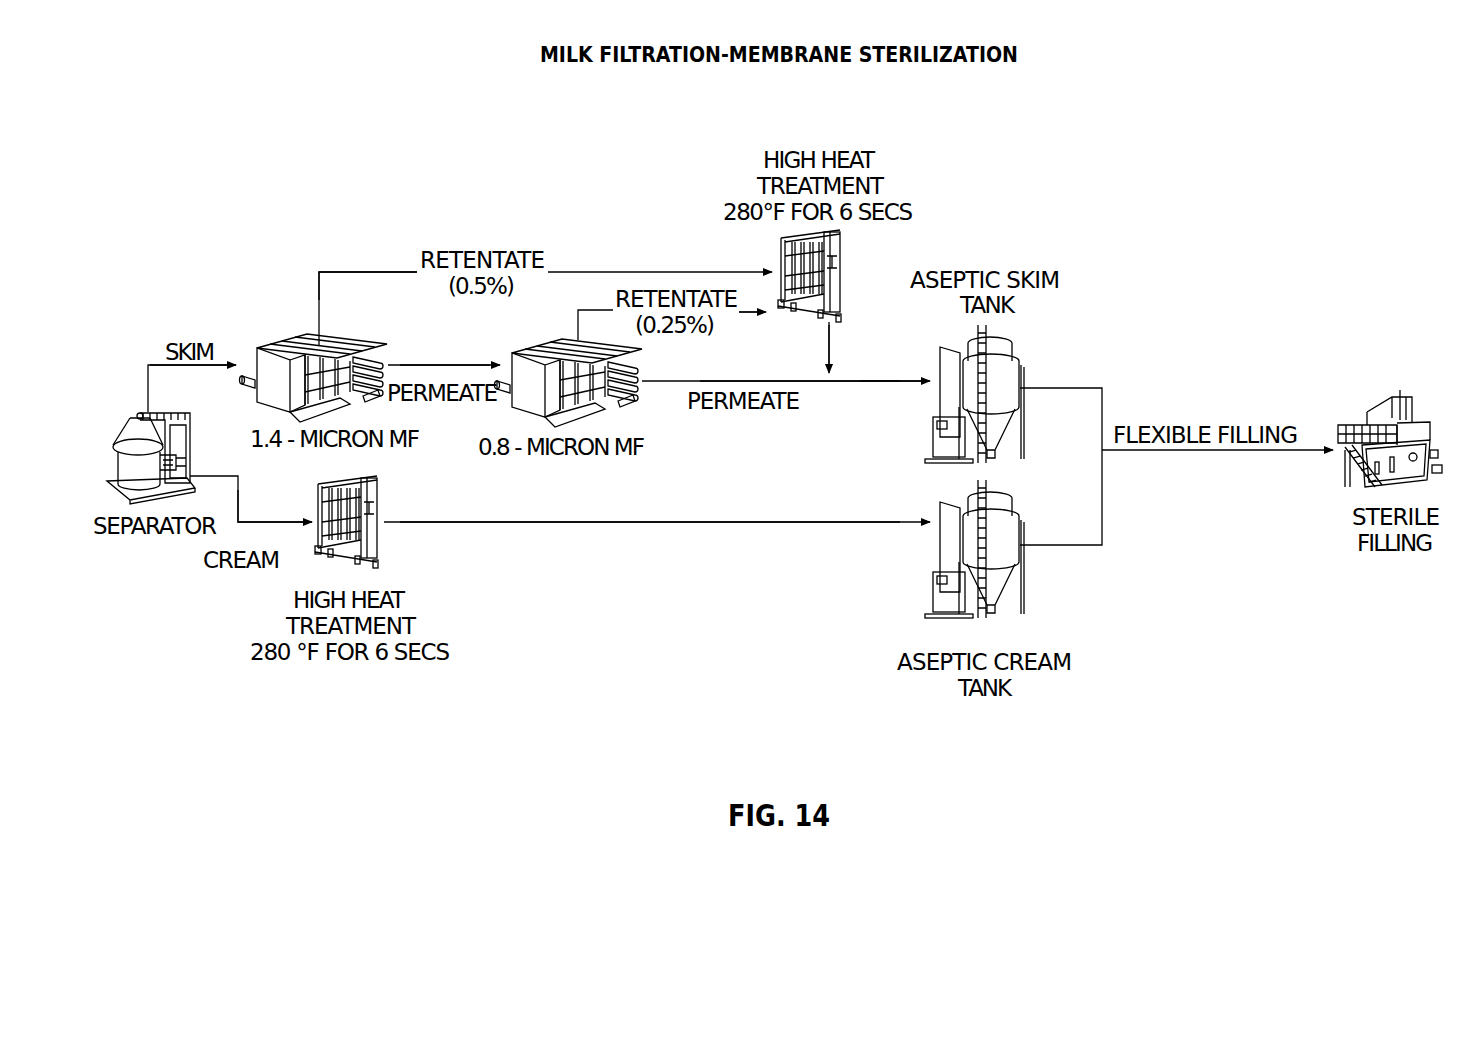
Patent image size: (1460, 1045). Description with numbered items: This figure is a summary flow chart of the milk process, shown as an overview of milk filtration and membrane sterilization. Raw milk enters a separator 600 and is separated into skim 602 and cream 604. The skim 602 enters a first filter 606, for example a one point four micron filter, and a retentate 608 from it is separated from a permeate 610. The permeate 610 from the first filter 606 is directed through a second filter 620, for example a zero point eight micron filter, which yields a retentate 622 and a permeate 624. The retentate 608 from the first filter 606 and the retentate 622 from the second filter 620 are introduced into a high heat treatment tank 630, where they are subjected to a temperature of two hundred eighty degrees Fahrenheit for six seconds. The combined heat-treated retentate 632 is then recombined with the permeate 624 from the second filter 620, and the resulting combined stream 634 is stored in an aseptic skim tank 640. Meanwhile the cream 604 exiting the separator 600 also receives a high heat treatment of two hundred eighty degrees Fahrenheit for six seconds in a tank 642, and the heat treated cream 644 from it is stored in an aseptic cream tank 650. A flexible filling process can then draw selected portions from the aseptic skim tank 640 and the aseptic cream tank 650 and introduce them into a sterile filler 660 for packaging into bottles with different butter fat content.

The separator 600 is at (139, 412).
The skim 602 is at (187, 333).
The cream 604 is at (228, 574).
The first filter 606 is at (262, 347).
The retentate 608 is at (367, 272).
The permeate 610 is at (445, 364).
The second filter 620 is at (628, 393).
The retentate 622 is at (750, 314).
The permeate 624 is at (805, 385).
The high heat treatment tank 630 is at (840, 268).
The combined heat-treated retentate 632 is at (832, 357).
The combined stream 634 is at (890, 380).
The aseptic skim tank 640 is at (1020, 375).
The tank 642 is at (384, 530).
The heat treated cream 644 is at (640, 525).
The aseptic cream tank 650 is at (1020, 558).
The sterile filler 660 is at (1397, 400).